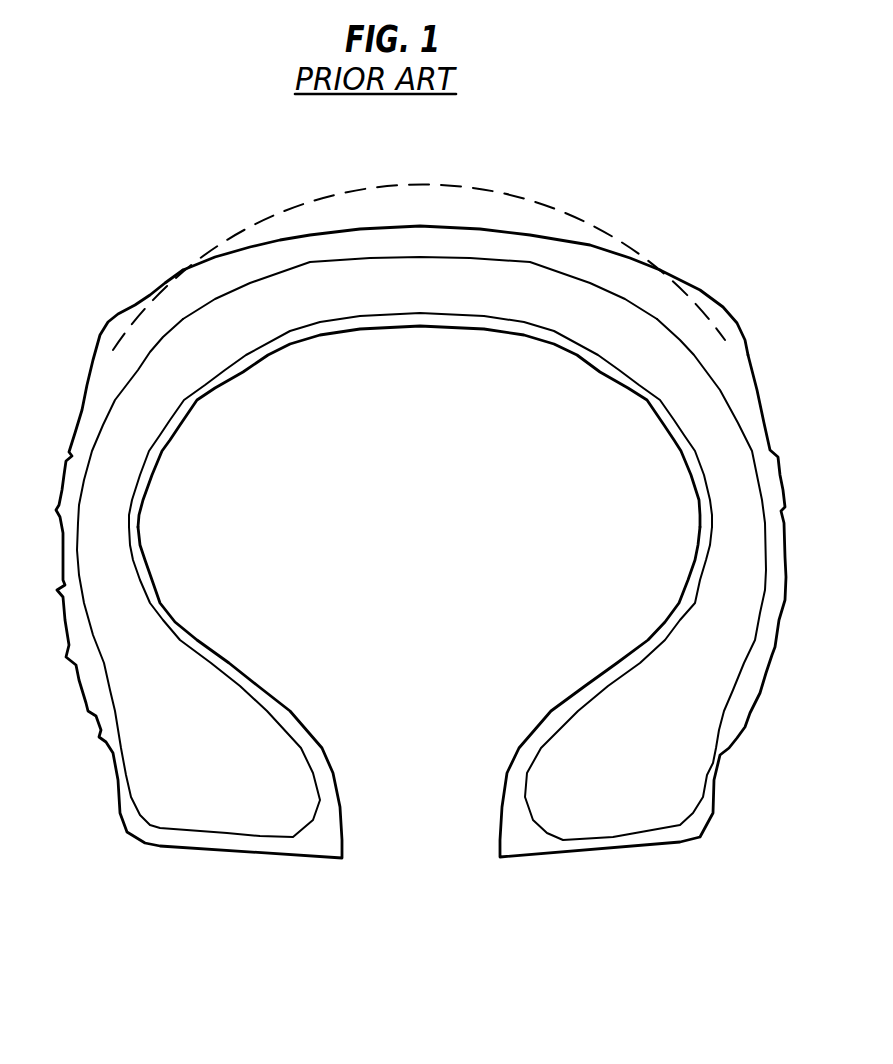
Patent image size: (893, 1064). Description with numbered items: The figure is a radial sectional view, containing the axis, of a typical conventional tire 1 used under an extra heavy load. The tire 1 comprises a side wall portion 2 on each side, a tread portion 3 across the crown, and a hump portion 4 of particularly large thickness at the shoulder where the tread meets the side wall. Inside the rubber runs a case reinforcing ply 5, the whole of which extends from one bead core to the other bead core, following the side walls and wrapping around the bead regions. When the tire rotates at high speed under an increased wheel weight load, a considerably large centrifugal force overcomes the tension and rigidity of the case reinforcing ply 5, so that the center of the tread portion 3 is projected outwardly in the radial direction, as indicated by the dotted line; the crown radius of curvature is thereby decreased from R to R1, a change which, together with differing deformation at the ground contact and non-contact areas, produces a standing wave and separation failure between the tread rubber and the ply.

The tire 1 is at (157, 278).
The side wall portion 2 is at (777, 526).
The tread portion 3 is at (640, 283).
The hump portion 4 is at (719, 347).
The case reinforcing ply 5 is at (668, 385).
The crown radius of curvature R is at (562, 240).
The decreased crown radius of curvature R1 is at (537, 168).